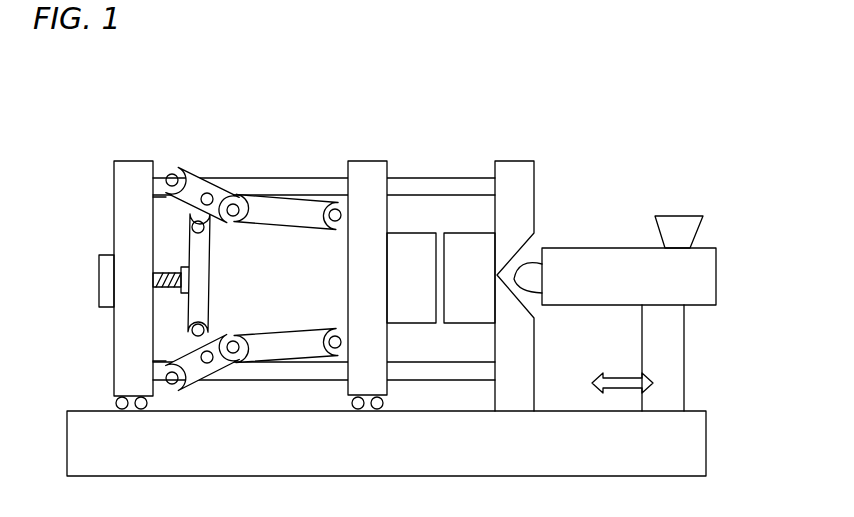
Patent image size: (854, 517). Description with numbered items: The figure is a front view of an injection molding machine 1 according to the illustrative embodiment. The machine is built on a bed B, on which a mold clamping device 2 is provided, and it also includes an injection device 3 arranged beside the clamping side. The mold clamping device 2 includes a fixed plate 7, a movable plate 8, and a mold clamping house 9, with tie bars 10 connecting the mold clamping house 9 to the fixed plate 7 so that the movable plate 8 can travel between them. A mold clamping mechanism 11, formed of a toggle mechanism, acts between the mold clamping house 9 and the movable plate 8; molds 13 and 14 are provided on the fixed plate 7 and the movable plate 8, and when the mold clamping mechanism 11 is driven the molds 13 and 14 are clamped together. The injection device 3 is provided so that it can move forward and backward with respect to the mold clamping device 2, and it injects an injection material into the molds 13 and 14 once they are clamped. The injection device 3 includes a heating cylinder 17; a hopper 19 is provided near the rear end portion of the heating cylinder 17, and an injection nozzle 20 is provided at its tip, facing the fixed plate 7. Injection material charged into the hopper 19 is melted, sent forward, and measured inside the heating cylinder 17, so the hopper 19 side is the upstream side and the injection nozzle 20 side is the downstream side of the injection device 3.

The injection molding machine 1 is at (708, 138).
The mold clamping device 2 is at (320, 131).
The injection device 3 is at (614, 210).
The fixed plate 7 is at (512, 161).
The movable plate 8 is at (369, 161).
The mold clamping house 9 is at (128, 161).
The tie bar 10 is at (450, 178).
The mold clamping mechanism 11 is at (211, 183).
The mold 13 is at (455, 233).
The mold 14 is at (416, 233).
The heating cylinder 17 is at (572, 248).
The hopper 19 is at (671, 216).
The injection nozzle 20 is at (526, 289).
The bed B is at (77, 409).